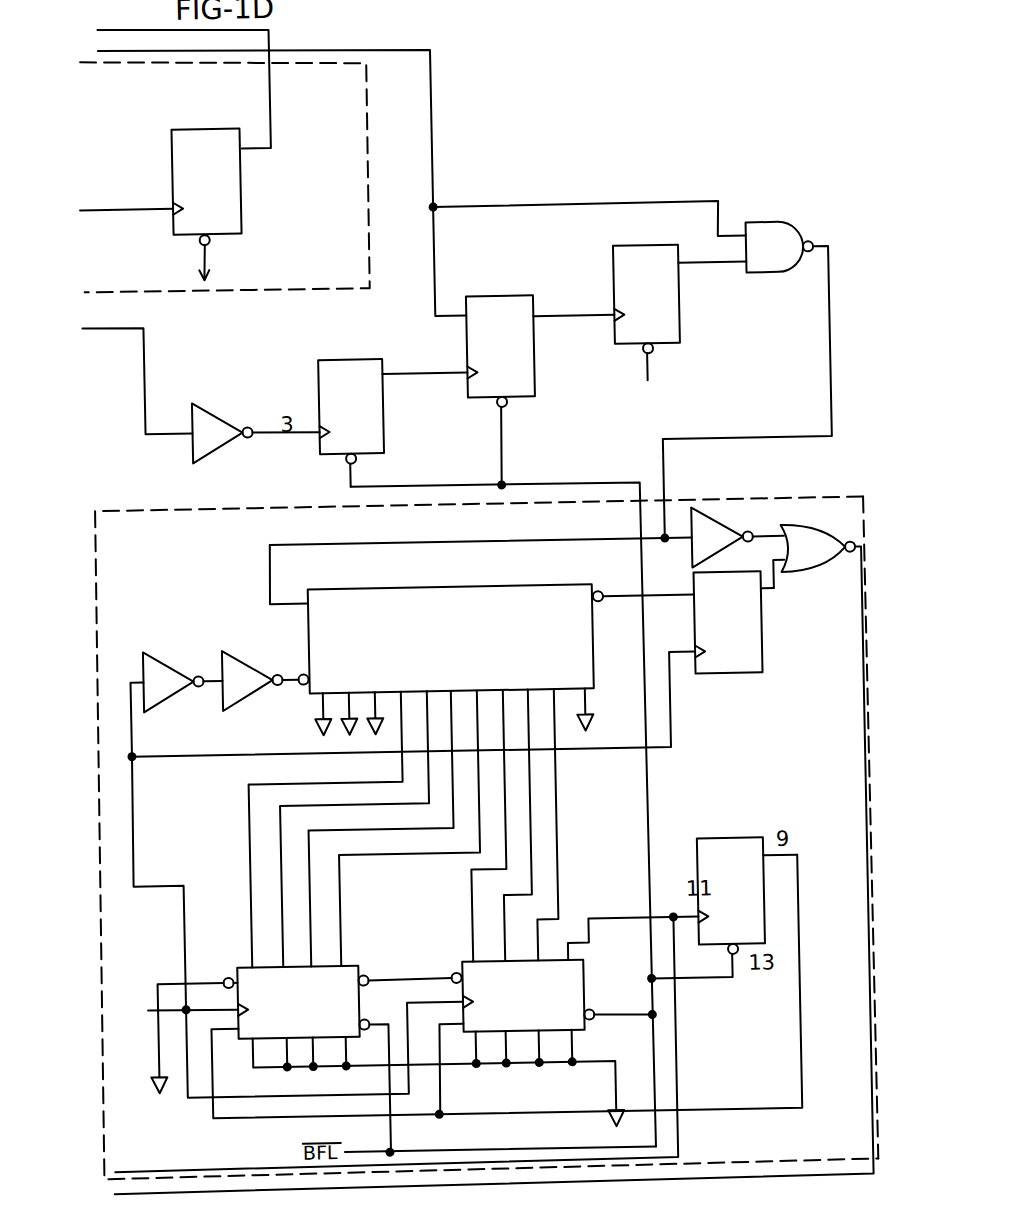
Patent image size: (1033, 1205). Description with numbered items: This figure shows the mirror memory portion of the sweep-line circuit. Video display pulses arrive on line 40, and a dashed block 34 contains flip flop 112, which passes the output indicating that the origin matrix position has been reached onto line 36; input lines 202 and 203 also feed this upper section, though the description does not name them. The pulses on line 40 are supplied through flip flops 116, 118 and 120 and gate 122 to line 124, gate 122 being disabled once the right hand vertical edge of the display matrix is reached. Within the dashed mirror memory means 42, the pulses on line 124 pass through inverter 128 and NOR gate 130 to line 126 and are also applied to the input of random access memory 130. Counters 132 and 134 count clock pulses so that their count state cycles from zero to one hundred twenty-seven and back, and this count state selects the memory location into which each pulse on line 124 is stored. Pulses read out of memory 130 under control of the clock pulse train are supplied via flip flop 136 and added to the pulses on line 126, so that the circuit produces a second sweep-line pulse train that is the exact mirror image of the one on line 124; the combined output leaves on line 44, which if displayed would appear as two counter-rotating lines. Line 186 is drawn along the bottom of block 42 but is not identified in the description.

The line 36 is at (124, 23).
The line 40 is at (176, 47).
The flip-flop circuit 34 is at (246, 288).
The flip flop 112 is at (250, 208).
The input line 202 is at (105, 205).
The input line 203 is at (98, 324).
The flip flop 116 is at (388, 416).
The flip flop 118 is at (539, 386).
The flip flop 120 is at (688, 325).
The gate 122 is at (774, 223).
The line 124 is at (835, 391).
The mirror memory means 42 is at (484, 822).
The line 126 is at (862, 707).
The inverter 128 is at (706, 532).
The random access memory 130 is at (792, 530).
The flip flop 136 is at (721, 677).
The counter 132 is at (337, 964).
The counter 134 is at (453, 961).
The line 44 is at (131, 1186).
The line 186 is at (202, 1165).